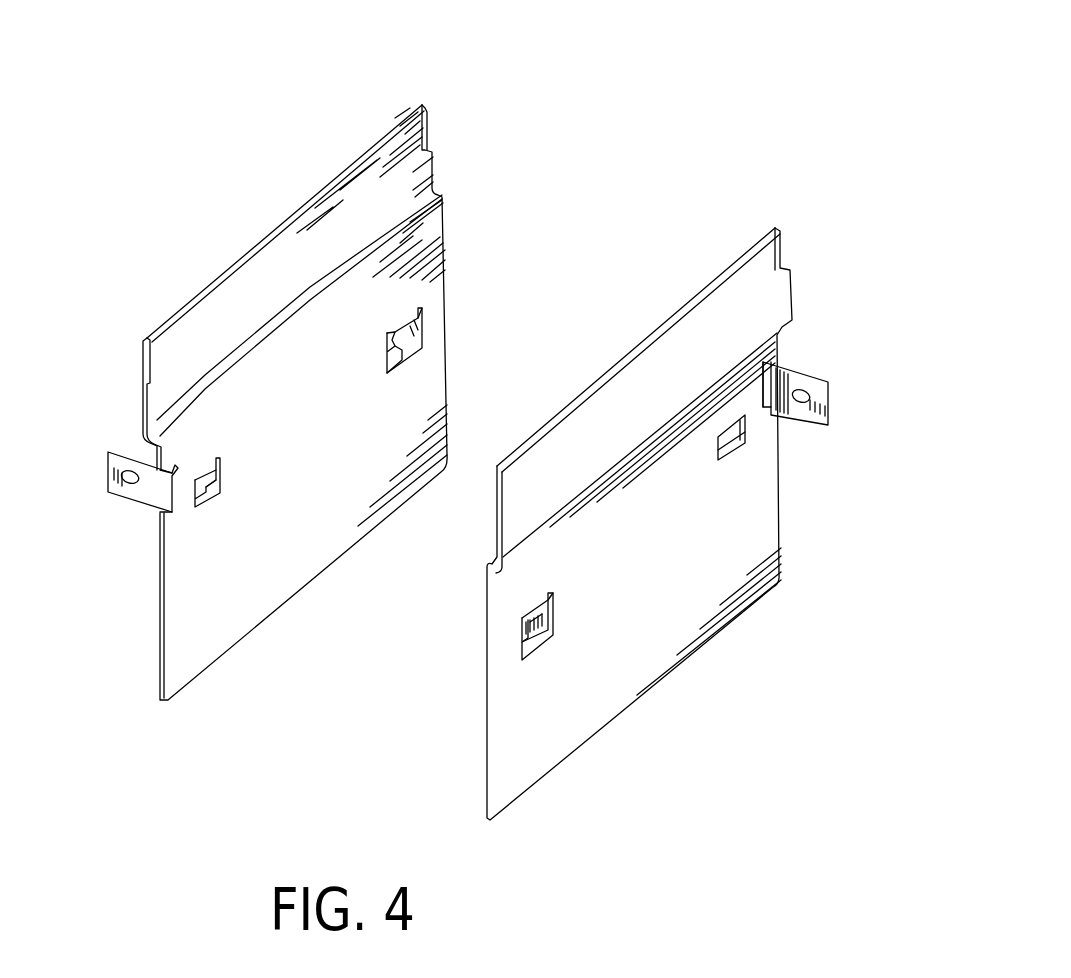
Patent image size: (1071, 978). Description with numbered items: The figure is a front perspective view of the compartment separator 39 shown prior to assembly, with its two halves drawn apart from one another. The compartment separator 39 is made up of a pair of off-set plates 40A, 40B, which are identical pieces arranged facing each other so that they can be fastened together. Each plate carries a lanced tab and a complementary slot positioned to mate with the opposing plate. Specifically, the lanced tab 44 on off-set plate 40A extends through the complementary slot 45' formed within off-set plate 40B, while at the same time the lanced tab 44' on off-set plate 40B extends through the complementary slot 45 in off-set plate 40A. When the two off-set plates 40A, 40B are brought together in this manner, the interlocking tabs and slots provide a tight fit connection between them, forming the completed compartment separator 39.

The compartment separator 39 is at (895, 227).
The off-set plate 40A is at (158, 580).
The off-set plate 40B is at (782, 532).
The lanced tab 44 is at (470, 324).
The lanced tab 44' is at (594, 619).
The complementary slot 45 is at (236, 511).
The complementary slot 45' is at (823, 439).